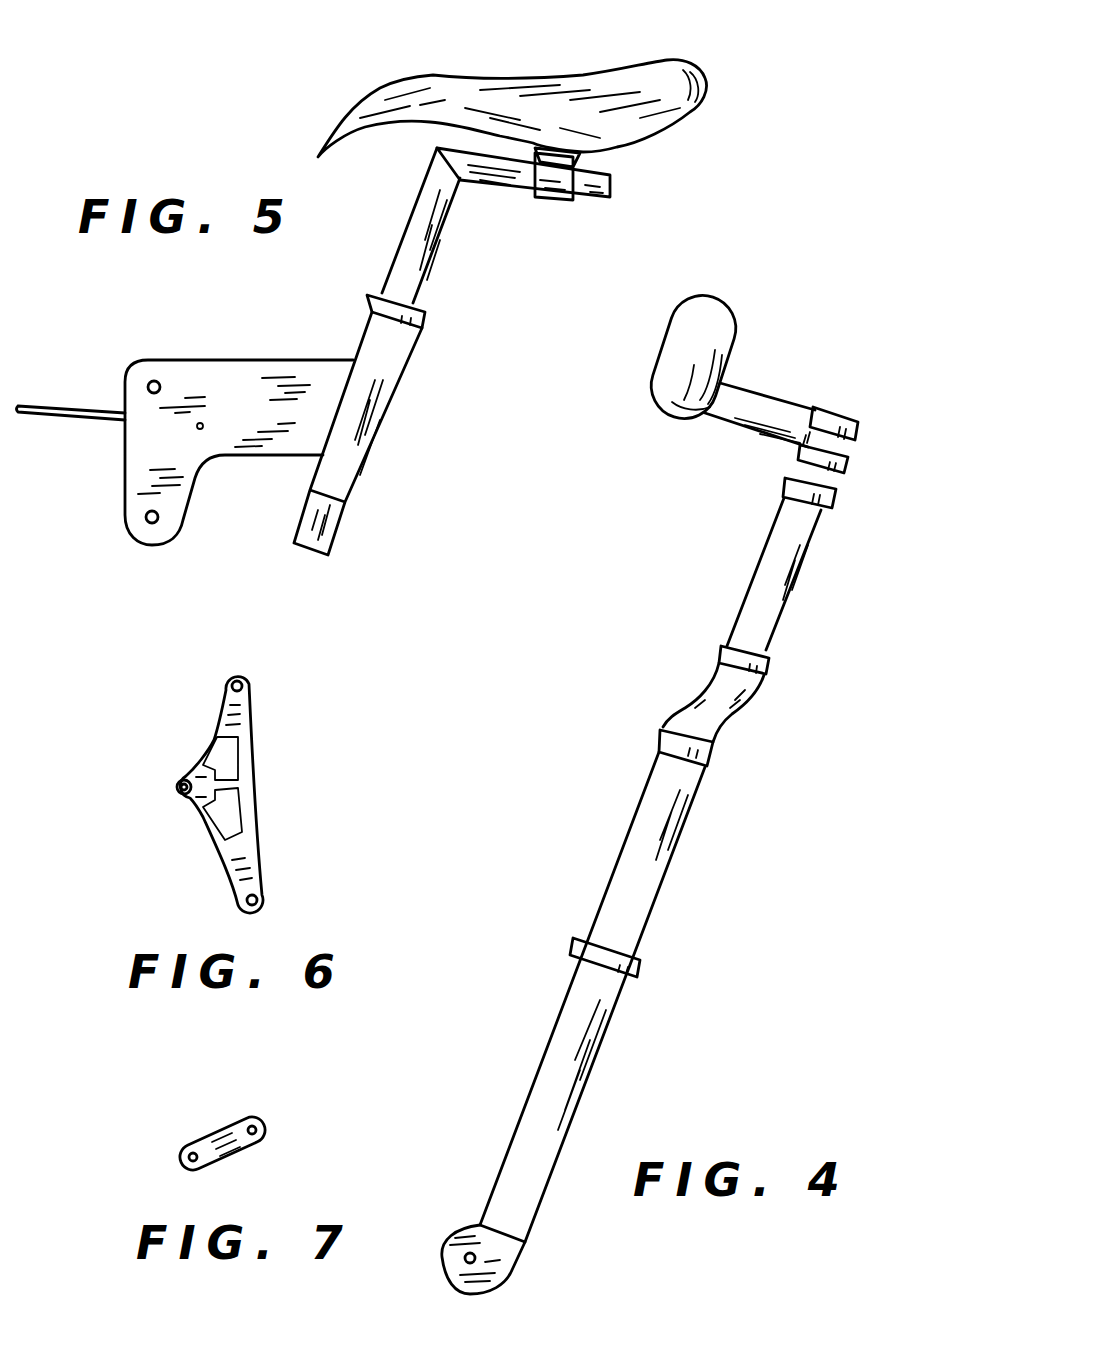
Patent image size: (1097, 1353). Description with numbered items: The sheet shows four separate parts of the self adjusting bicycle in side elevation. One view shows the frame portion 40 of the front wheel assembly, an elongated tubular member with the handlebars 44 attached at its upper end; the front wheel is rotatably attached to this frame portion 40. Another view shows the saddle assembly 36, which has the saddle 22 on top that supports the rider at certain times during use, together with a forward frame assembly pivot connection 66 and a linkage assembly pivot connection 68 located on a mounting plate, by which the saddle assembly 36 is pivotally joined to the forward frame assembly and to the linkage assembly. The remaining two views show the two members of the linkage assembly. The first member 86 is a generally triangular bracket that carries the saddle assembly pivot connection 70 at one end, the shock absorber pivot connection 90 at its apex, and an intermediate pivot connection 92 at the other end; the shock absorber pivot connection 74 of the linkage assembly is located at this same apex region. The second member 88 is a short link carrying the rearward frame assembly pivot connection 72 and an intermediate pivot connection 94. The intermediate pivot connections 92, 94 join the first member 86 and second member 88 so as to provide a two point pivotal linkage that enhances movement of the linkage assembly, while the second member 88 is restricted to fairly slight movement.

In FIG. 5, the saddle 22 is at (547, 75).
In FIG. 5, the saddle assembly 36 is at (450, 435).
In FIG. 4, the frame portion 40 is at (650, 790).
In FIG. 4, the handlebars 44 is at (656, 377).
In FIG. 5, the forward frame assembly pivot connection 66 is at (150, 382).
In FIG. 5, the linkage assembly pivot connection 68 is at (146, 515).
In FIG. 6, the saddle assembly pivot connection 70 is at (230, 682).
In FIG. 7, the rearward frame assembly pivot connection 72 is at (257, 1137).
In FIG. 6, the shock absorber pivot connection 74 is at (180, 783).
In FIG. 6, the first member 86 is at (263, 778).
In FIG. 7, the second member 88 is at (198, 1129).
In FIG. 6, the shock absorber pivot connection 90 is at (180, 797).
In FIG. 6, the intermediate pivot connection 92 is at (262, 897).
In FIG. 7, the intermediate pivot connection 94 is at (187, 1157).